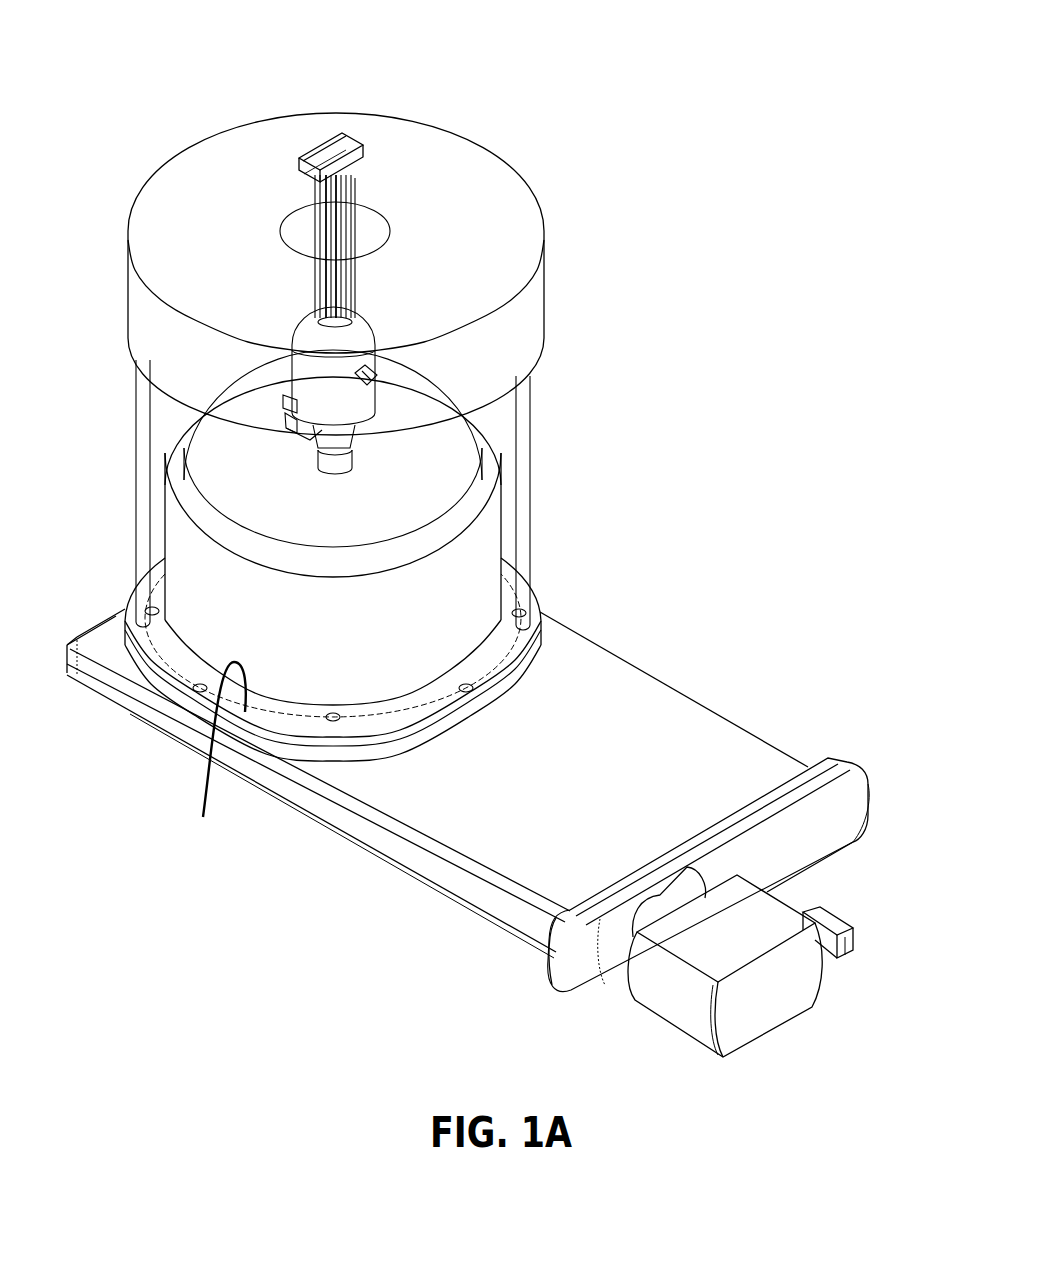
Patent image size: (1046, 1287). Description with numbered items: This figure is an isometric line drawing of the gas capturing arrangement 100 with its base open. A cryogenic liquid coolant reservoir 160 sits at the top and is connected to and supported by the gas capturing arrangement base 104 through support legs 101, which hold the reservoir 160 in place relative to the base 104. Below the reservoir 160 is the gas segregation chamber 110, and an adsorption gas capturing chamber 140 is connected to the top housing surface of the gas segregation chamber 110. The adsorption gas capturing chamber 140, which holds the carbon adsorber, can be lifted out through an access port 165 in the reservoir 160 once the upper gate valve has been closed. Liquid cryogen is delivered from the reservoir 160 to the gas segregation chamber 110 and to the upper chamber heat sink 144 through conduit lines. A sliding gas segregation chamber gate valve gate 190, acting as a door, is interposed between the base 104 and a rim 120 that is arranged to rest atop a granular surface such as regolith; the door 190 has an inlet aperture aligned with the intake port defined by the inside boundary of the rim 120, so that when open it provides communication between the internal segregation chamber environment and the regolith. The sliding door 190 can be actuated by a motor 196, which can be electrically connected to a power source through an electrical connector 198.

The gas capturing arrangement 100 is at (350, 47).
The support legs 101 is at (135, 460).
The gas capturing arrangement base 104 is at (215, 758).
The gas segregation chamber 110 is at (348, 644).
The rim 120 is at (184, 776).
The adsorption gas capturing chamber 140 is at (297, 380).
The upper chamber heat sink 144 is at (352, 216).
The reservoir 160 is at (545, 292).
The access port 165 is at (303, 222).
The sliding gas segregation chamber gate valve gate 190 is at (600, 787).
The motor 196 is at (792, 982).
The electrical connector 198 is at (841, 958).